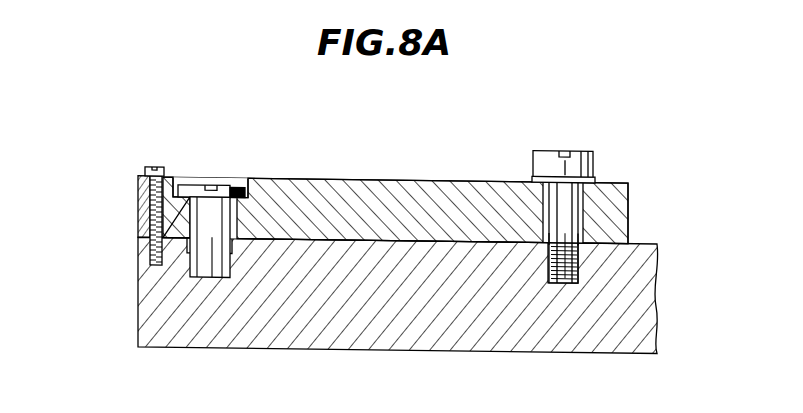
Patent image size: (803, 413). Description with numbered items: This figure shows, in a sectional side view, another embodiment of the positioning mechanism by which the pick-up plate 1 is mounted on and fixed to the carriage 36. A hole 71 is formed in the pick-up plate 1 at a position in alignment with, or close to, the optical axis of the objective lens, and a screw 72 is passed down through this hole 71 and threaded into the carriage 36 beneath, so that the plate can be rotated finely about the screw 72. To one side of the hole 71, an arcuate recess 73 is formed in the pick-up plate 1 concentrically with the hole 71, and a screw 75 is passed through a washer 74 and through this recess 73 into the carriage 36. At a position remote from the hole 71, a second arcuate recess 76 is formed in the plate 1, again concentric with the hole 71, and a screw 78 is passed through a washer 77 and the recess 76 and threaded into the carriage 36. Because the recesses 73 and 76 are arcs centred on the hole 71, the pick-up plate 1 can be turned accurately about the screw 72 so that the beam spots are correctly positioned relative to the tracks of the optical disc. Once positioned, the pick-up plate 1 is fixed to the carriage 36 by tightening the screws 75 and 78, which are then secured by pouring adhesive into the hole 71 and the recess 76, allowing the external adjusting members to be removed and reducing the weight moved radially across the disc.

The pick-up plate 1 is at (360, 178).
The carriage 36 is at (327, 352).
The hole 71 is at (238, 178).
The screw 72 is at (197, 185).
The arcuate recess 73 is at (148, 223).
The washer 74 is at (147, 172).
The screw 75 is at (150, 167).
The arcuate recess 76 is at (574, 212).
The washer 77 is at (530, 177).
The screw 78 is at (583, 150).